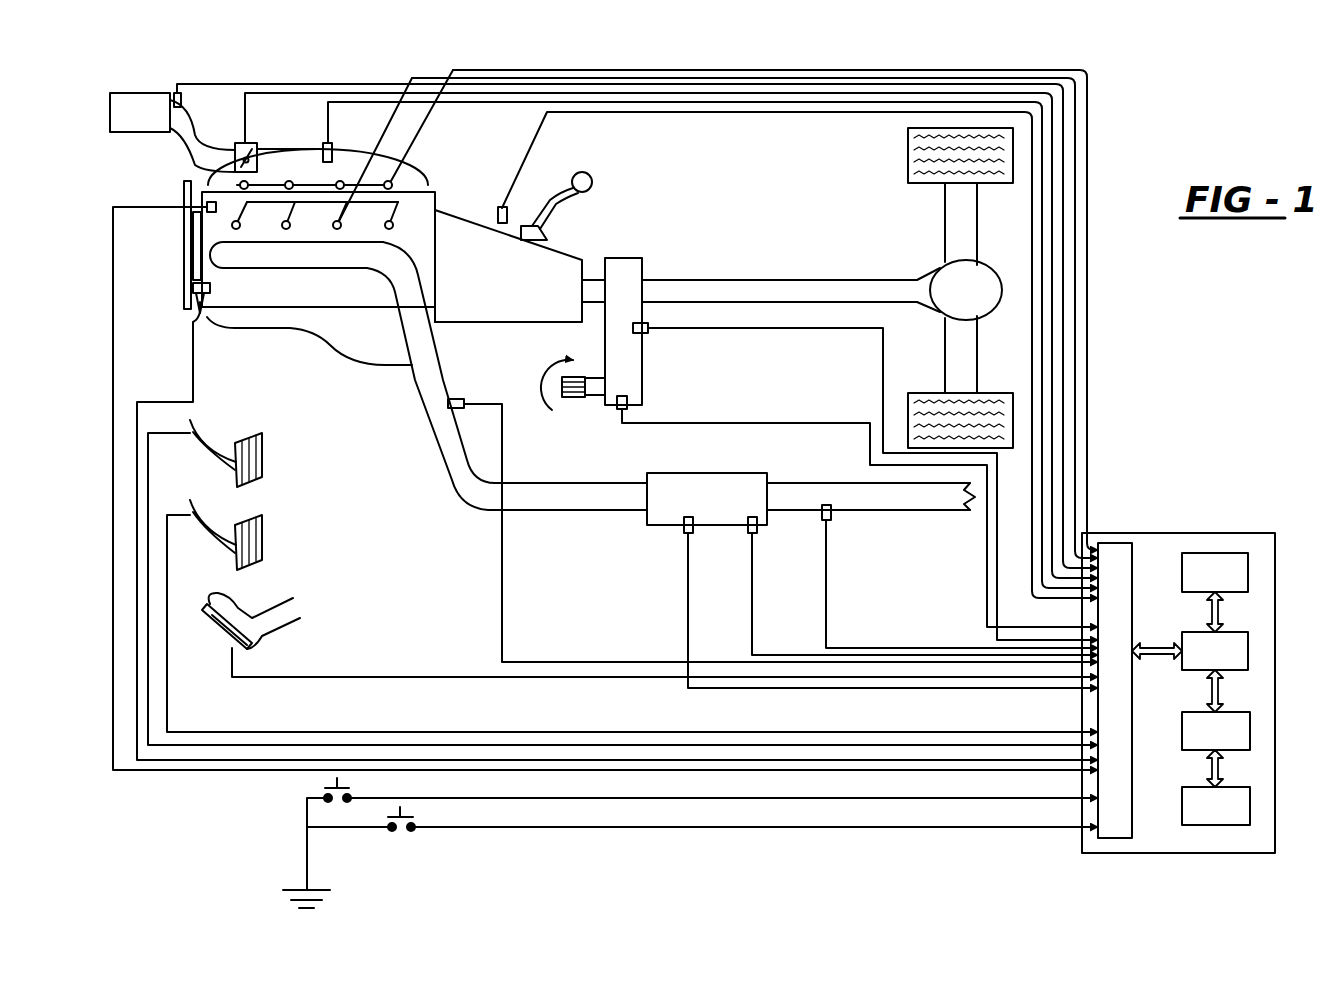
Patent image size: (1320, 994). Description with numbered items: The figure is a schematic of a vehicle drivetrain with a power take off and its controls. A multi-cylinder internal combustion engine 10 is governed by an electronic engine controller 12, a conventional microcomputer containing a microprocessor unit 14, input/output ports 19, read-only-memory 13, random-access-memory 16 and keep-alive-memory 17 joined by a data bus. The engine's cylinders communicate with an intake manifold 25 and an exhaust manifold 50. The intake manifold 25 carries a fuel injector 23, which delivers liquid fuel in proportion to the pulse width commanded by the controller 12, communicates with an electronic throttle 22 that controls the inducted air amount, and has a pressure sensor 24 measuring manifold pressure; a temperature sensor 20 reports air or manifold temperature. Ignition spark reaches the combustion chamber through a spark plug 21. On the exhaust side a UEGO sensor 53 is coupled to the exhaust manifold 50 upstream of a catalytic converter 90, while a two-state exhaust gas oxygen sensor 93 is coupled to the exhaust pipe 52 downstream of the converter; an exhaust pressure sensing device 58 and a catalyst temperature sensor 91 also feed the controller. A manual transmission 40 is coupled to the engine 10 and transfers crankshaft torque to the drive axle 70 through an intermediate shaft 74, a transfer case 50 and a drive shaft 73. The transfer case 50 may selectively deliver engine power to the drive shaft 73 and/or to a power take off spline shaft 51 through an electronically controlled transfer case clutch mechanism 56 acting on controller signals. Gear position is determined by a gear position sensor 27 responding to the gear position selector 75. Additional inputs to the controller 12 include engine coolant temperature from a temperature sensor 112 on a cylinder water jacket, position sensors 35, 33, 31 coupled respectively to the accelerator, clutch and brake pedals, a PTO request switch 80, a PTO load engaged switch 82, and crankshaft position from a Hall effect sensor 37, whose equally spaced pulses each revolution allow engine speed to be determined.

The internal combustion engine 10 is at (188, 188).
The electronic engine controller 12 is at (1222, 531).
The read-only-memory 13 is at (1252, 576).
The microprocessor unit 14 is at (1252, 656).
The random-access-memory 16 is at (1254, 735).
The keep-alive-memory 17 is at (1255, 806).
The input/output ports 19 is at (1117, 840).
The temperature sensor 20 is at (172, 96).
The spark plug 21 is at (398, 228).
The electronic throttle 22 is at (258, 142).
The fuel injector 23 is at (400, 182).
The pressure sensor 24 is at (330, 142).
The intake manifold 25 is at (412, 180).
The gear position sensor 27 is at (496, 212).
The brake pedal position sensor 31 is at (214, 440).
The clutch pedal position sensor 33 is at (216, 524).
The accelerator pedal position sensor 35 is at (210, 633).
The Hall effect sensor 37 is at (197, 322).
The manual transmission 40 is at (462, 326).
The exhaust manifold 50 is at (632, 410).
The power take off spline shaft 51 is at (578, 402).
The exhaust pipe 52 is at (786, 481).
The UEGO sensor 53 is at (466, 399).
The transfer case clutch mechanism 56 is at (652, 333).
The exhaust pressure sensing device 58 is at (682, 538).
The drive axle 70 is at (990, 315).
The drive shaft 73 is at (717, 278).
The intermediate shaft 74 is at (592, 272).
The gear position selector 75 is at (566, 198).
The PTO request switch 80 is at (322, 782).
The PTO load engaged switch 82 is at (403, 840).
The catalytic converter 90 is at (683, 471).
The catalyst temperature sensor 91 is at (760, 535).
The two-state exhaust gas oxygen sensor 93 is at (832, 523).
The temperature sensor 112 is at (205, 215).